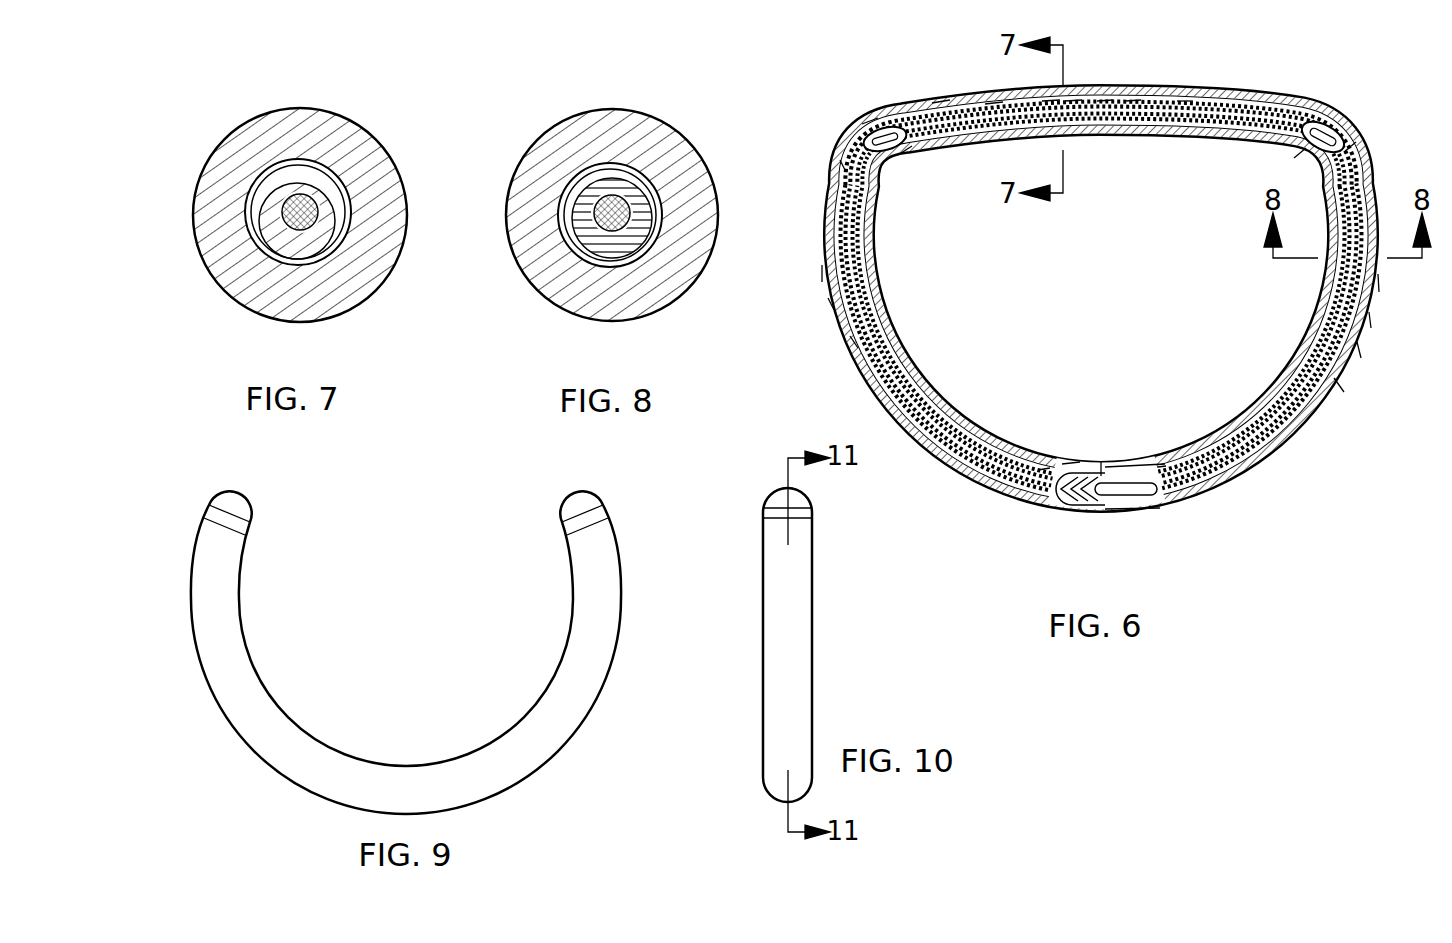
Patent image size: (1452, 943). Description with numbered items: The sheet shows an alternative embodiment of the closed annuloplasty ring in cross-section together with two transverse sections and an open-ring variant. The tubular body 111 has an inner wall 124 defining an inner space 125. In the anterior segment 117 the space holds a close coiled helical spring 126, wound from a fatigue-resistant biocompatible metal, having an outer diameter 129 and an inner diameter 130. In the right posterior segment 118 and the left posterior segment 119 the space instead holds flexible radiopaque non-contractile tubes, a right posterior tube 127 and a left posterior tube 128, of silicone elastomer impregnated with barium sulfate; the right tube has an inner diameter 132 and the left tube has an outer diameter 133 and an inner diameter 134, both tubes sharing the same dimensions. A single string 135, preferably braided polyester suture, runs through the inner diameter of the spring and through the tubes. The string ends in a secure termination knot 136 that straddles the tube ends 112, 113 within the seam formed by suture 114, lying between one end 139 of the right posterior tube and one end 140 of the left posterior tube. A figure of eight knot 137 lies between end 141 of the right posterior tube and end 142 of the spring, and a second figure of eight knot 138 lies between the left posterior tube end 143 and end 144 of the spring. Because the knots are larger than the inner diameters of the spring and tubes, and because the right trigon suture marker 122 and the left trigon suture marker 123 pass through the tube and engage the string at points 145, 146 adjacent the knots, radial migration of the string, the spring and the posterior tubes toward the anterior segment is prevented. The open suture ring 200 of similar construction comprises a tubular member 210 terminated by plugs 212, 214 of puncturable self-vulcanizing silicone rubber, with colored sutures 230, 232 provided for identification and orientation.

In FIG. 7, the tubular body 111 is at (281, 103).
In FIG. 8, the tubular body 111 is at (597, 103).
In FIG. 6, the tubular body 111 is at (1243, 97).
In FIG. 6, the tube end 112 is at (1087, 514).
In FIG. 6, the tube end 113 is at (1090, 514).
In FIG. 6, the suture 114 is at (1070, 463).
In FIG. 6, the anterior segment 117 is at (1050, 101).
In FIG. 6, the right posterior segment 118 is at (1379, 283).
In FIG. 6, the left posterior segment 119 is at (822, 273).
In FIG. 6, the right trigon suture marker 122 is at (1307, 123).
In FIG. 6, the left trigon suture marker 123 is at (873, 112).
In FIG. 7, the inner wall 124 is at (267, 172).
In FIG. 8, the inner wall 124 is at (583, 172).
In FIG. 6, the inner wall 124 is at (940, 103).
In FIG. 7, the inner space 125 is at (250, 195).
In FIG. 8, the inner space 125 is at (583, 238).
In FIG. 6, the inner space 125 is at (993, 104).
In FIG. 7, the close coiled helical spring 126 is at (280, 242).
In FIG. 6, the close coiled helical spring 126 is at (1105, 100).
In FIG. 8, the right posterior tube 127 is at (540, 275).
In FIG. 6, the right posterior tube 127 is at (1369, 320).
In FIG. 6, the left posterior tube 128 is at (830, 303).
In FIG. 6, the outer diameter 129 is at (1185, 100).
In FIG. 6, the inner diameter 130 is at (1073, 100).
In FIG. 6, the inner diameter 132 is at (1358, 350).
In FIG. 6, the outer diameter 133 is at (843, 165).
In FIG. 6, the inner diameter 134 is at (853, 342).
In FIG. 7, the string 135 is at (298, 226).
In FIG. 8, the string 135 is at (609, 236).
In FIG. 6, the string 135 is at (1133, 100).
In FIG. 6, the termination knot 136 is at (1103, 475).
In FIG. 6, the figure of eight knot 137 is at (1340, 137).
In FIG. 6, the figure of eight knot 138 is at (870, 133).
In FIG. 6, the tube end 139 is at (1338, 385).
In FIG. 6, the tube end 140 is at (1043, 470).
In FIG. 6, the tube end 141 is at (1350, 147).
In FIG. 6, the spring end 142 is at (862, 145).
In FIG. 6, the right loop 143 is at (1320, 130).
In FIG. 6, the spring end 144 is at (870, 123).
In FIG. 6, the engagement point 145 is at (1300, 153).
In FIG. 6, the engagement point 146 is at (905, 150).
In FIG. 9, the open suture ring 200 is at (389, 640).
In FIG. 10, the open suture ring 200 is at (725, 627).
In FIG. 9, the tubular member 210 is at (255, 722).
In FIG. 9, the plug 212 is at (243, 492).
In FIG. 9, the plug 214 is at (568, 493).
In FIG. 10, the plug 214 is at (780, 490).
In FIG. 9, the colored suture 230 is at (248, 528).
In FIG. 9, the colored suture 232 is at (564, 529).
In FIG. 10, the colored suture 232 is at (773, 516).